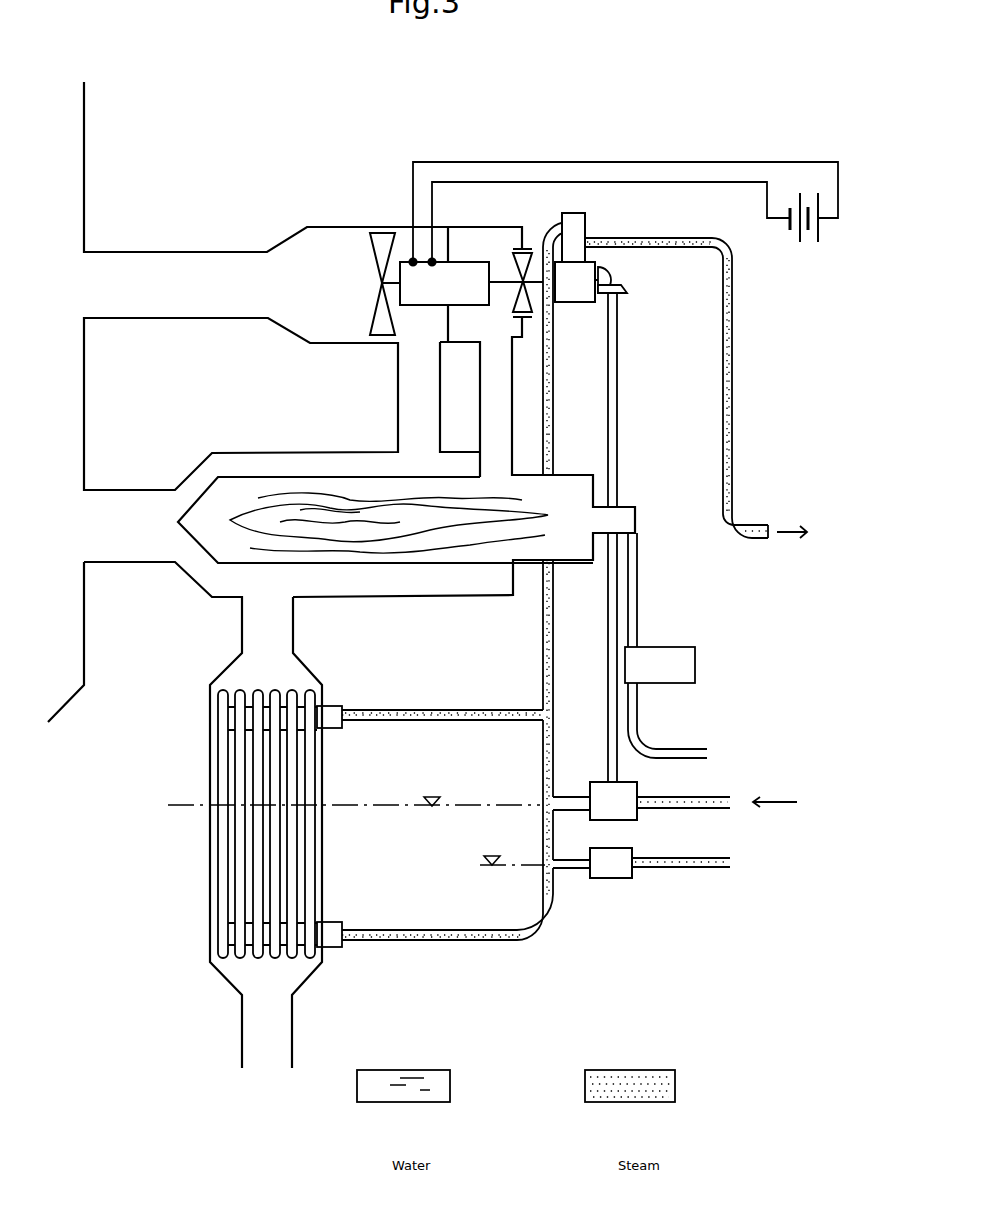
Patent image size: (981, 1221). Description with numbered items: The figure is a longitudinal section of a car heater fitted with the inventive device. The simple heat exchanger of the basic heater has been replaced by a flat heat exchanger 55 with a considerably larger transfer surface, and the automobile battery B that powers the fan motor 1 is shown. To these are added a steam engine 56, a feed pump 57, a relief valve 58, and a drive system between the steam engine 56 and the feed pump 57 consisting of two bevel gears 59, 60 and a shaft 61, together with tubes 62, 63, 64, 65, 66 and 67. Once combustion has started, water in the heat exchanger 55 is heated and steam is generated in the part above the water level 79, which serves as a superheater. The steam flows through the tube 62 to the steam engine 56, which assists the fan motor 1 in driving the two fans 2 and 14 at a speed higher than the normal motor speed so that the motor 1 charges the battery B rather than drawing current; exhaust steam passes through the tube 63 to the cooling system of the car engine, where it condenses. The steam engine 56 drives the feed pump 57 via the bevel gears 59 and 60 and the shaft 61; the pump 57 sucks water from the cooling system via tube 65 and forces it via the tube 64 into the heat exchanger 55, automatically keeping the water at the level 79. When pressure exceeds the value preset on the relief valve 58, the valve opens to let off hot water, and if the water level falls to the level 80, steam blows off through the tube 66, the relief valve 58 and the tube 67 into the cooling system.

The fan motor 1 is at (465, 262).
The fan 2 is at (525, 256).
The fan 14 is at (382, 243).
The flat heat exchanger 55 is at (242, 765).
The steam engine 56 is at (578, 213).
The feed pump 57 is at (637, 790).
The relief valve 58 is at (615, 878).
The bevel gear 59 is at (605, 272).
The bevel gear 60 is at (627, 290).
The shaft 61 is at (618, 707).
The tube 62 is at (432, 710).
The tube 63 is at (722, 247).
The tube 64 is at (567, 795).
The tube 65 is at (718, 808).
The tube 66 is at (578, 870).
The tube 67 is at (707, 867).
The water level 79 is at (432, 797).
The water level 80 is at (490, 855).
The automobile battery B is at (801, 193).